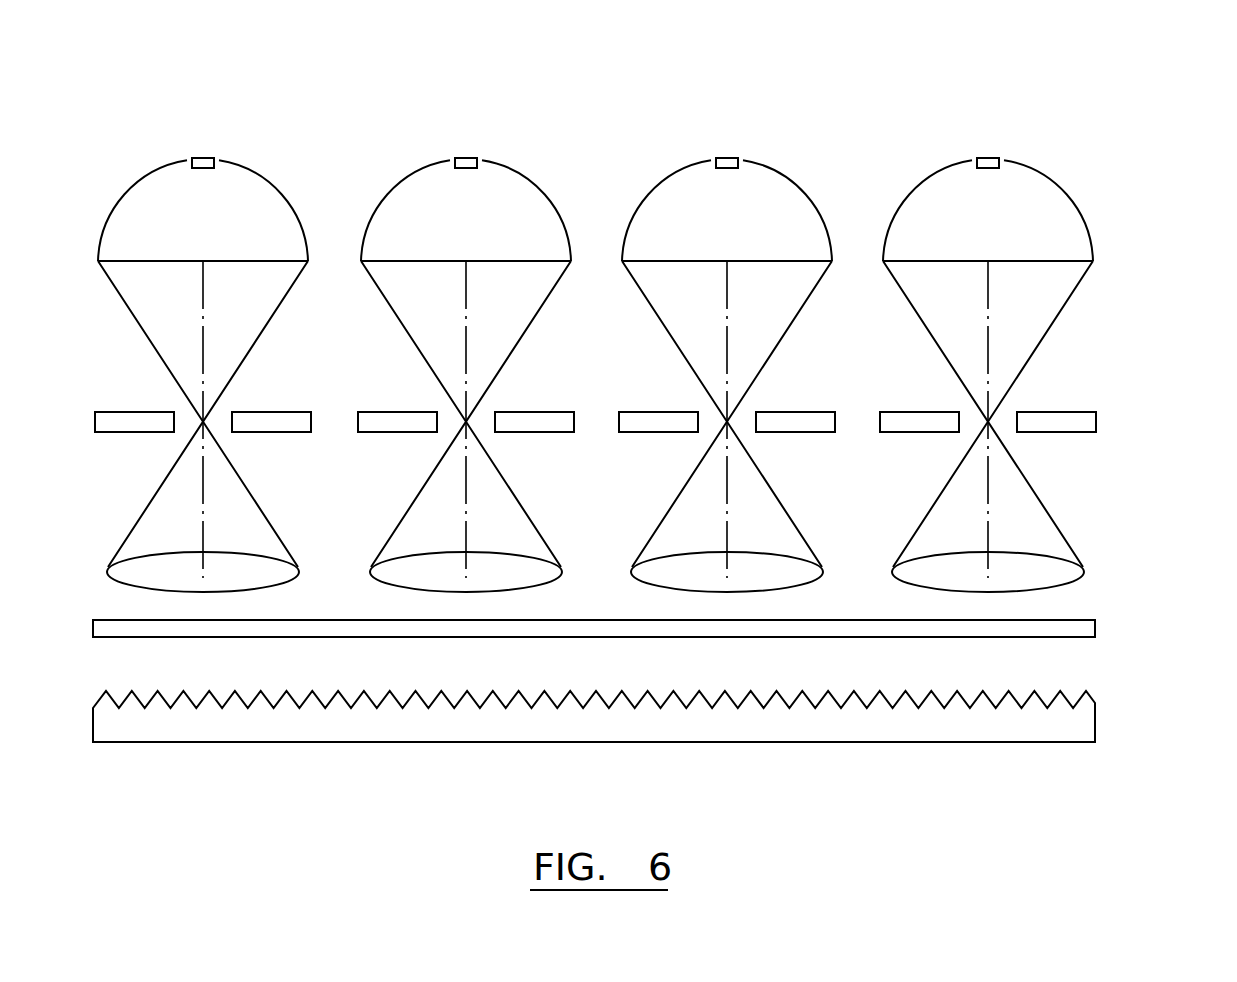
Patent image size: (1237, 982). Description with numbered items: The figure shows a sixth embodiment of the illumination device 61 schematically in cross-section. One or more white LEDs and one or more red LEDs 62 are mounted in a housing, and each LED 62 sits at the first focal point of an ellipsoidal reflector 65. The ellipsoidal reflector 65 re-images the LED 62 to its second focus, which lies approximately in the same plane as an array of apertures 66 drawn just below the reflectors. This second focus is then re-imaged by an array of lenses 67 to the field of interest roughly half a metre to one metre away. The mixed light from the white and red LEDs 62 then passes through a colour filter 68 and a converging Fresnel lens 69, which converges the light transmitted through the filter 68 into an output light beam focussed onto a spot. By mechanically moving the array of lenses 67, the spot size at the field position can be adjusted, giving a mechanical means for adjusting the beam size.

The illumination device 61 is at (666, 315).
The LED 62 is at (205, 157).
The ellipsoidal reflector 65 is at (1086, 222).
The array of apertures 66 is at (1097, 421).
The array of lenses 67 is at (1084, 566).
The colour filter 68 is at (1096, 626).
The converging Fresnel lens 69 is at (1096, 720).